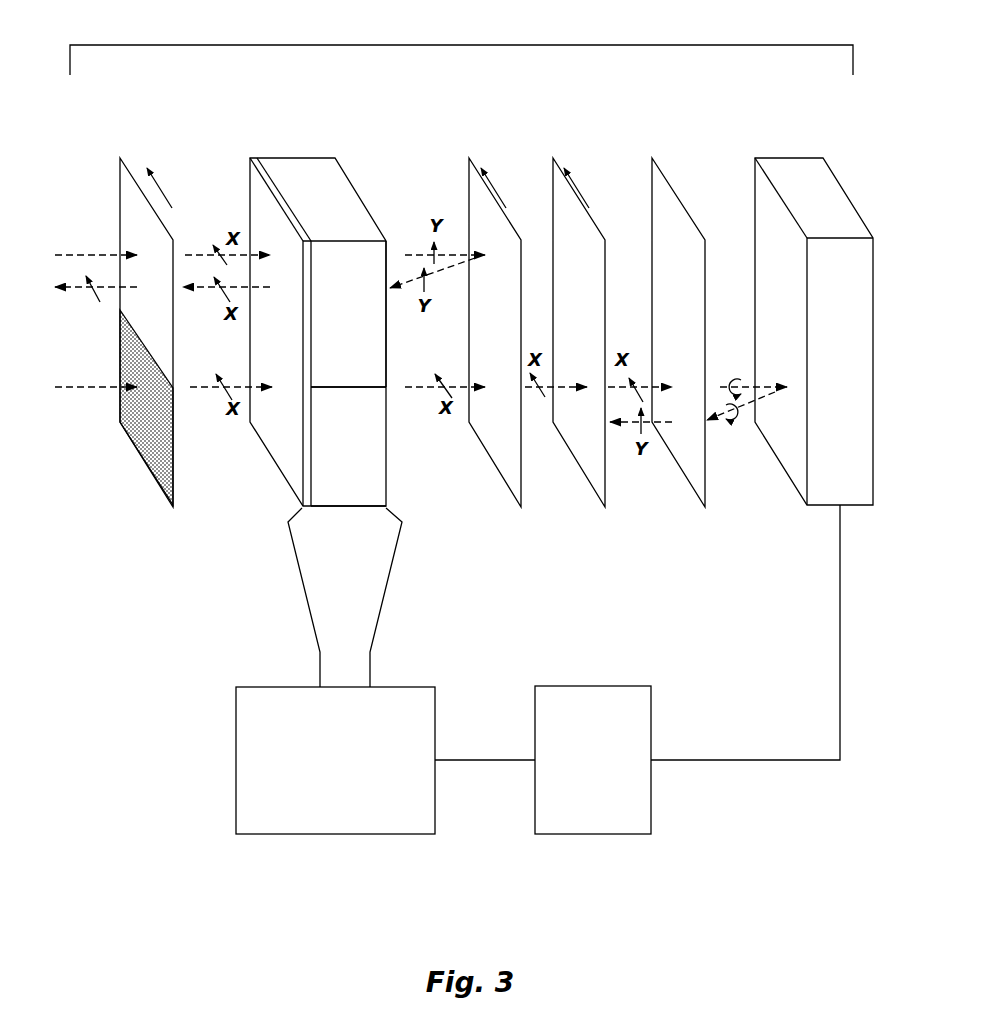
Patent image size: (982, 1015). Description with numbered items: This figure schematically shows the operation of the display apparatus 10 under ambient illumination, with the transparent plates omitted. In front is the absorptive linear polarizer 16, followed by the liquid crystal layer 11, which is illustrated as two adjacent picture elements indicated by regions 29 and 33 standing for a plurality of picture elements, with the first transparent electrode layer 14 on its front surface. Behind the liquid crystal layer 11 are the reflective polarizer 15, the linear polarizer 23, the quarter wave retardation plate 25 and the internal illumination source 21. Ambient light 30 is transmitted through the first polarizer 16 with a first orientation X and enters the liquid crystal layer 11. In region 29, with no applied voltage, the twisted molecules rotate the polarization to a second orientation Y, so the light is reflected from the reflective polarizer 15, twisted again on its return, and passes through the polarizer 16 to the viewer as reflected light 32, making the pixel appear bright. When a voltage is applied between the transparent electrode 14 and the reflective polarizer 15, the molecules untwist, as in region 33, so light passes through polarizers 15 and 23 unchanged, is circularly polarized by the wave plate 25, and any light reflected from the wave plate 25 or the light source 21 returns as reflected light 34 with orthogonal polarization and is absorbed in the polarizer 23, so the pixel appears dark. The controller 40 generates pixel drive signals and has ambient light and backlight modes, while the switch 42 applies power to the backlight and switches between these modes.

The display apparatus 10 is at (458, 45).
The liquid crystal layer 11 is at (347, 387).
The first transparent electrode layer 14 is at (255, 158).
The reflective polarizer 15 is at (521, 507).
The absorptive linear polarizer 16 is at (173, 507).
The internal illumination source 21 is at (862, 507).
The linear polarizer 23 is at (605, 507).
The quarter wave retardation plate 25 is at (705, 507).
The relaxed state region 29 is at (360, 272).
The ambient light 30 is at (77, 256).
The reflected light to viewer 32 is at (90, 287).
The untwisted region 33 is at (362, 447).
The reflected light 34 is at (750, 402).
The controller 40 is at (430, 834).
The switch 42 is at (651, 816).